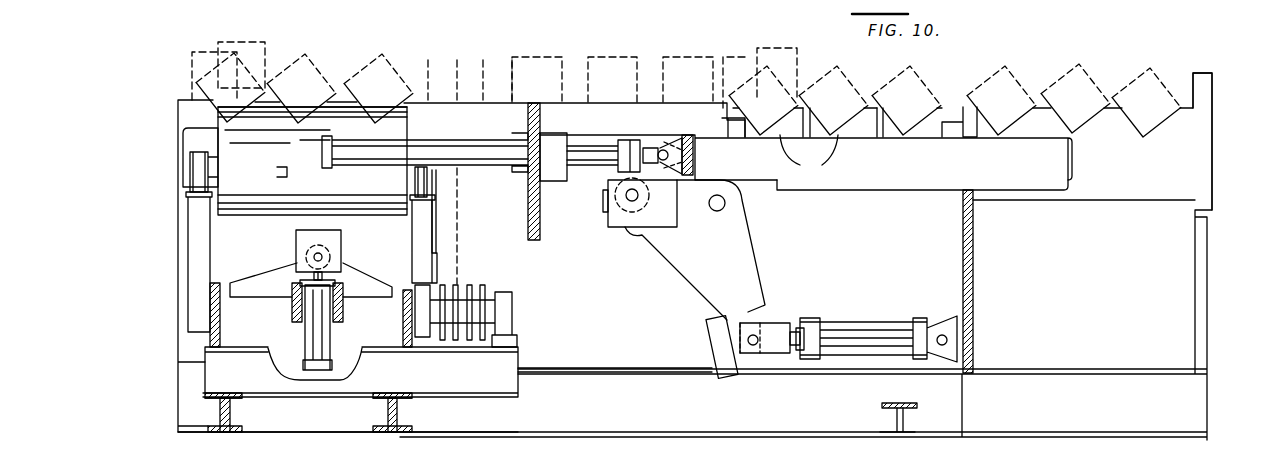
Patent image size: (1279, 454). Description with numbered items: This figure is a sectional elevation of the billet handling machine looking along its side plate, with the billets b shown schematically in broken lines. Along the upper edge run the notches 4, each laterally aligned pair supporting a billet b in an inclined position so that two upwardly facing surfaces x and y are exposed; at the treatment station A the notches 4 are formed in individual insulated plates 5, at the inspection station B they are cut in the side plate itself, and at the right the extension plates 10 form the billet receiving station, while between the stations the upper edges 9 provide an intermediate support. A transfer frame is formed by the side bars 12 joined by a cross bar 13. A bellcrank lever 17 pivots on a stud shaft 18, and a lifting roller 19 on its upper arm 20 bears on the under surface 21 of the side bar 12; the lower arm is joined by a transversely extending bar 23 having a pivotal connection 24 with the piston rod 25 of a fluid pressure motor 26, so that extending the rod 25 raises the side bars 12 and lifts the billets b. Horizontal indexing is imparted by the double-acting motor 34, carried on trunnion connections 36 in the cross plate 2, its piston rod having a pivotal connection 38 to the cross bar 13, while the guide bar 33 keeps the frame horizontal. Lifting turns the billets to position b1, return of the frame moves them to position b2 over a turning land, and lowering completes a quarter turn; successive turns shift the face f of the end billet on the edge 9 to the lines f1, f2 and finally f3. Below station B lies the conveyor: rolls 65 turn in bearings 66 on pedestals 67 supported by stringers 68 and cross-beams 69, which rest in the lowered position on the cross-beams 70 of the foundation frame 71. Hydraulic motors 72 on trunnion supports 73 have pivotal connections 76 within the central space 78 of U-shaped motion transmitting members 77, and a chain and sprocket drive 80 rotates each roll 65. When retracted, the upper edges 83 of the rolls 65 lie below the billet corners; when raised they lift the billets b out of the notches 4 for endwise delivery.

The cross plate 2 is at (540, 226).
The notches 4 is at (327, 107).
The individual plates 5 is at (809, 153).
The upper edges of the side plates 9 is at (650, 102).
The extension plates 10 is at (1203, 141).
The side bars 12 is at (1068, 162).
The cross bar 13 is at (697, 151).
The levers 17 is at (750, 246).
The stud shafts 18 is at (719, 211).
The lifting rollers 19 is at (612, 220).
The upper arms 20 is at (636, 238).
The under surfaces 21 is at (610, 176).
The transversely extending bar 23 is at (712, 330).
The pivotal connection 24 is at (748, 340).
The piston rod 25 is at (791, 325).
The fluid pressure motor 26 is at (860, 322).
The guide bar 33 is at (1034, 192).
The double-acting fluid pressure motor 34 is at (483, 158).
The trunnion connections 36 is at (552, 178).
The pivotal connection 38 is at (697, 168).
The conveyor rolls 65 is at (280, 168).
The bearings 66 is at (197, 178).
The pedestals 67 is at (195, 230).
The stringers 68 is at (221, 346).
The cross-beams 69 is at (262, 396).
The cross-beams of the foundation frame 70 is at (220, 409).
The foundation frame 71 is at (345, 433).
The hydraulic motors 72 is at (305, 346).
The trunnion supports 73 is at (292, 305).
The pivotal connections 76 is at (330, 252).
The motion transmitting members 77 is at (252, 253).
The central space 78 is at (360, 284).
The chain and sprocket drive 80 is at (460, 261).
The upper edges of the conveyor rolls 83 is at (285, 108).
The billets b is at (257, 60).
The billet position b1 is at (257, 42).
The billet position b2 is at (192, 62).
The billet surface x is at (312, 62).
The billet surface y is at (332, 65).
The inspection station B is at (390, 25).
The treatment station A is at (880, 222).
The billet face f is at (512, 60).
The billet face position f1 is at (483, 60).
The billet face position f2 is at (457, 60).
The billet face position f3 is at (428, 60).